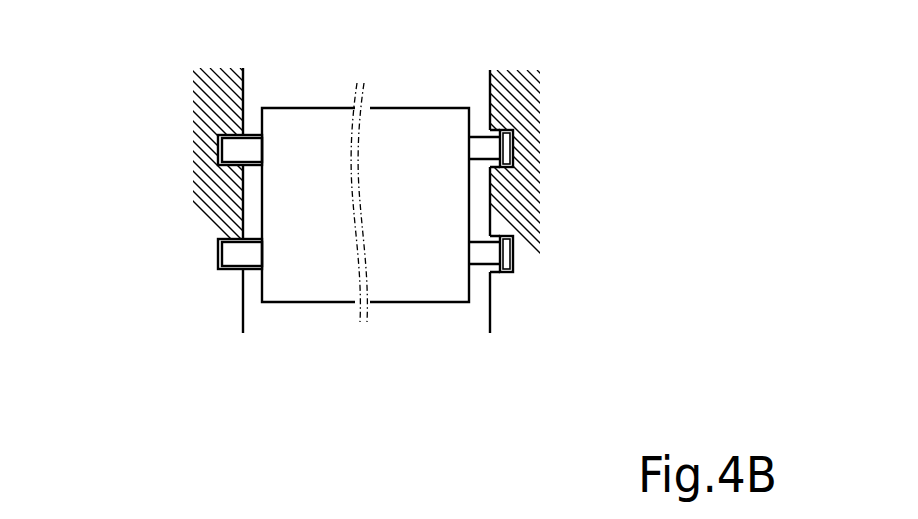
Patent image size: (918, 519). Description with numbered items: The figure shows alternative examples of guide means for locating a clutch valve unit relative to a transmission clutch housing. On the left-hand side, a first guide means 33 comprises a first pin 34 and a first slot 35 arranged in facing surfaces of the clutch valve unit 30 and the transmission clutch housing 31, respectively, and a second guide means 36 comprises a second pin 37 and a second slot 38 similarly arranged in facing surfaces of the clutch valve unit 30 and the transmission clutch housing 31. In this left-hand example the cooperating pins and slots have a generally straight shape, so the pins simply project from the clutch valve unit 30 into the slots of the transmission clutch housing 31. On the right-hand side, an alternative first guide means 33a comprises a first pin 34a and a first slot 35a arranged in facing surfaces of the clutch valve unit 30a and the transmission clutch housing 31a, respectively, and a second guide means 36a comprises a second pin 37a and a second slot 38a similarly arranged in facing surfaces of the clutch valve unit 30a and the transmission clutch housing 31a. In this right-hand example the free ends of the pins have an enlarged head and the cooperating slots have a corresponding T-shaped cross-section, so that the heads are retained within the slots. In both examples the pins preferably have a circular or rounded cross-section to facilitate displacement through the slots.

The clutch valve unit 30 is at (297, 290).
The clutch valve unit 30a is at (408, 283).
The transmission clutch housing 31 is at (243, 88).
The transmission clutch housing 31a is at (489, 88).
The first guide means 33 is at (172, 151).
The first guide means 33a is at (558, 132).
The first pin 34 is at (234, 150).
The first pin 34a is at (503, 152).
The first slot 35 is at (222, 140).
The first slot 35a is at (513, 147).
The second guide means 36 is at (170, 282).
The second guide means 36a is at (558, 272).
The second pin 37 is at (234, 255).
The second pin 37a is at (504, 253).
The second slot 38 is at (218, 262).
The second slot 38a is at (514, 268).